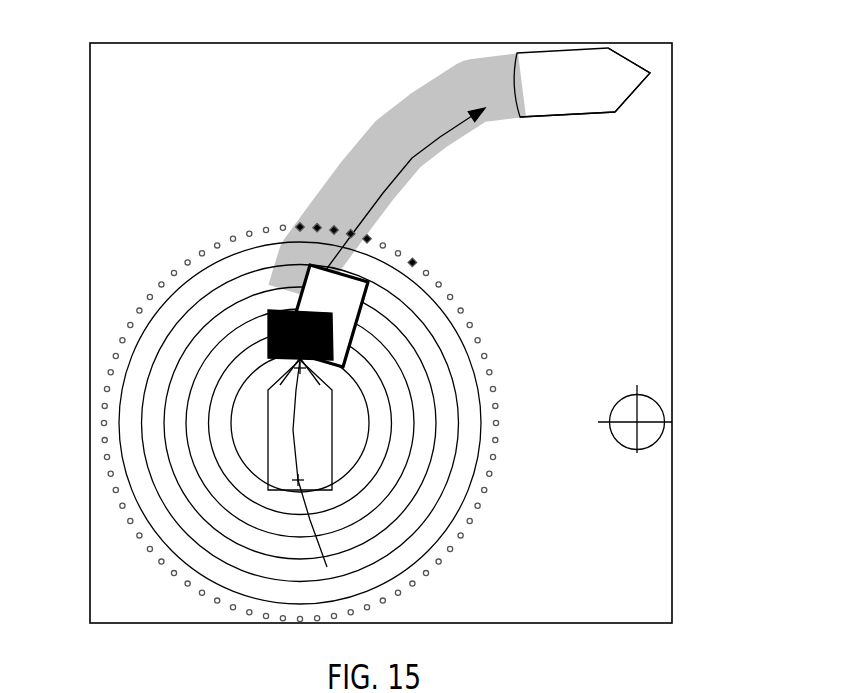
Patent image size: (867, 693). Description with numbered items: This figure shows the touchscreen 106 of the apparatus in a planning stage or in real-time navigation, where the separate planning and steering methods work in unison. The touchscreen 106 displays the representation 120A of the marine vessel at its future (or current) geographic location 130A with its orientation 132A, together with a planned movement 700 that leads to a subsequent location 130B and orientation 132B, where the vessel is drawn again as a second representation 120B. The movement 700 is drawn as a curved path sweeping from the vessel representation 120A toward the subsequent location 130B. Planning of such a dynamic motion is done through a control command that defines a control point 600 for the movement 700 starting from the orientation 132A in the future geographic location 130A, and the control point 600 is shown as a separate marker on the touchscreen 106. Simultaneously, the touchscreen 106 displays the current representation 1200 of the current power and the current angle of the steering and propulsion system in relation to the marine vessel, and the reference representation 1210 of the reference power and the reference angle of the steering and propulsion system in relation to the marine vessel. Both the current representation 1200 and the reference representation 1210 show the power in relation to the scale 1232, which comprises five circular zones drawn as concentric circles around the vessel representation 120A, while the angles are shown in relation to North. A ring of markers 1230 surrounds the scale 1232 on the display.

The touchscreen 106 is at (90, 67).
The representation of the marine vessel 120A is at (332, 428).
The future geographic location 130A is at (300, 430).
The orientation 132A is at (300, 356).
The representation of the marine vessel 120B is at (553, 52).
The subsequent location 130B is at (573, 78).
The subsequent orientation 132B is at (650, 73).
The control point 600 is at (607, 428).
The movement 700 is at (410, 162).
The graphical representation of the current power and the current angle 1200 is at (268, 335).
The graphical representation of the reference power and the reference angle 1210 is at (362, 318).
The index markers 1230 is at (300, 218).
The scale 1232 is at (108, 425).